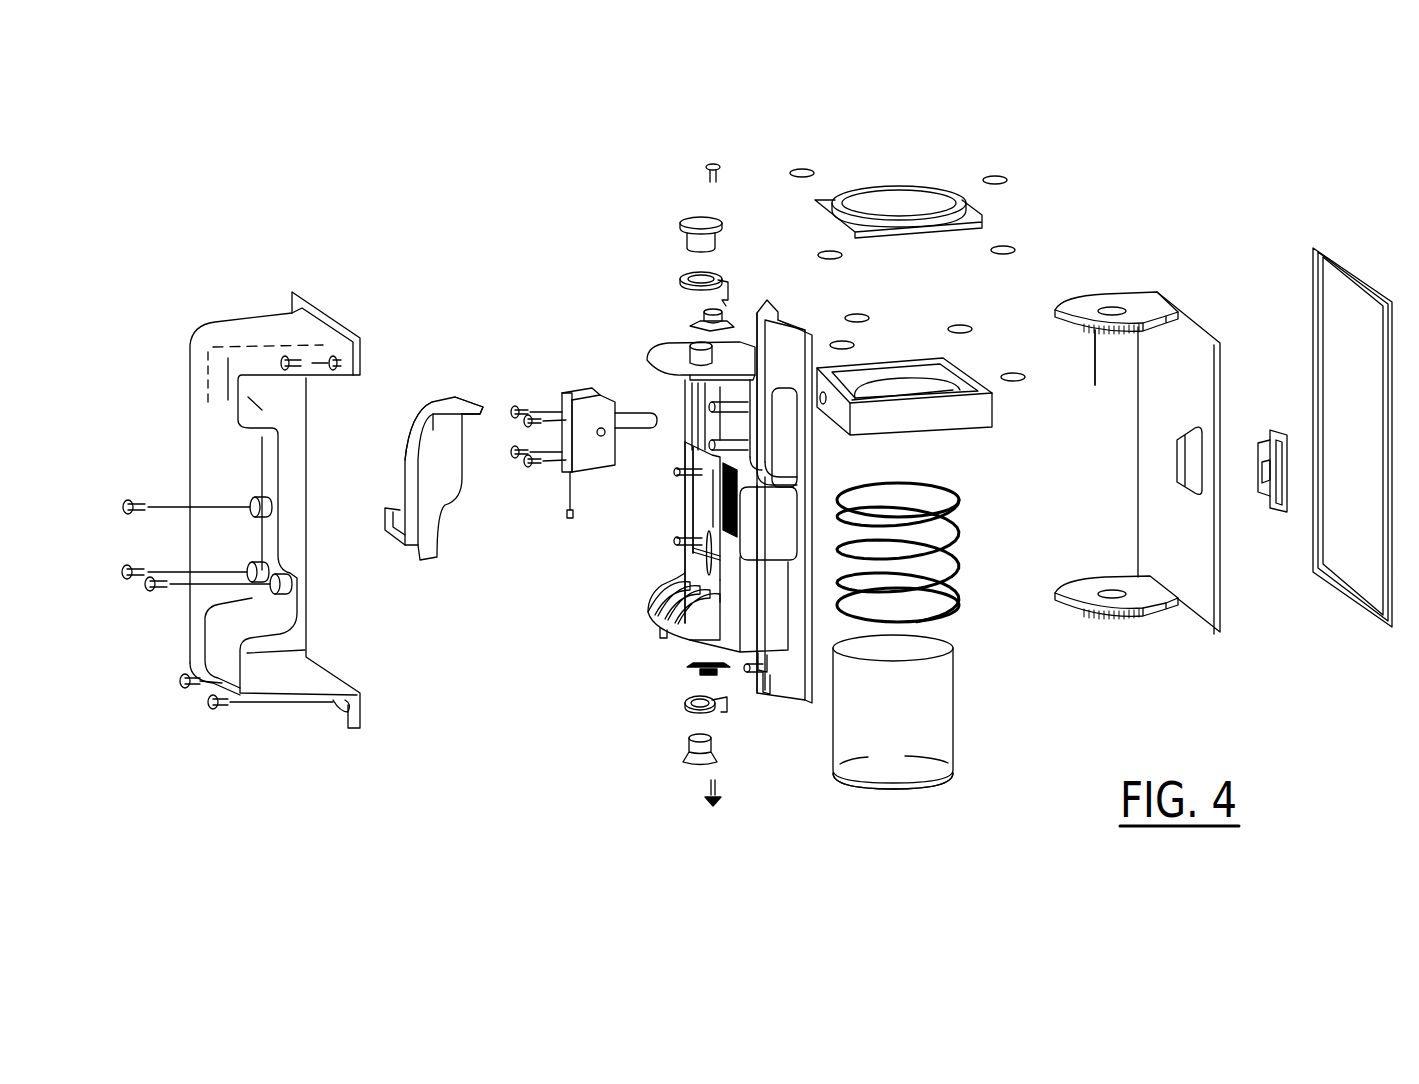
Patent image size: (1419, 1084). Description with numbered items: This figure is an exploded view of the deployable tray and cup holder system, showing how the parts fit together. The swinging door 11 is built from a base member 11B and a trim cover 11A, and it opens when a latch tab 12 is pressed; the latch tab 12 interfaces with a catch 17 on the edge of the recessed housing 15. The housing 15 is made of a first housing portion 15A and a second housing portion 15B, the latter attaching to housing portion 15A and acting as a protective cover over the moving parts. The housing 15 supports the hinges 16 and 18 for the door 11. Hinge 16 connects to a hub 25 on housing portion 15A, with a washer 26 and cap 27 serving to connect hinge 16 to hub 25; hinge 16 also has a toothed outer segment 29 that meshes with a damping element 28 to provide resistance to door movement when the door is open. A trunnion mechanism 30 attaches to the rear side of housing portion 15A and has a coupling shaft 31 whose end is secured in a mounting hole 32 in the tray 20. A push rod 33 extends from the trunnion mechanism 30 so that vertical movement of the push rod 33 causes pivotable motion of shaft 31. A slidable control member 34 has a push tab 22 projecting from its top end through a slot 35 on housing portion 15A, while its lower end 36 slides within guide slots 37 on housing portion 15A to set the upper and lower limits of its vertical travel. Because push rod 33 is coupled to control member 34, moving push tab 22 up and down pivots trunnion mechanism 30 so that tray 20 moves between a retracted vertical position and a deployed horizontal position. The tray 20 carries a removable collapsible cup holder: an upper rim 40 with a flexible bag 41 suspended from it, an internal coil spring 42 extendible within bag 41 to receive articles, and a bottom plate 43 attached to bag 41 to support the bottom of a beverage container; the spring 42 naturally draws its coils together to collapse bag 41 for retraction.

The swinging door 11 is at (1370, 195).
The trim cover 11A is at (1368, 284).
The base member 11B is at (1213, 328).
The latch tab 12 is at (1268, 427).
The recessed housing 15 is at (153, 788).
The first housing portion 15A is at (793, 692).
The second housing portion 15B is at (283, 703).
The hinge 16 is at (1107, 295).
The catch 17 is at (792, 542).
The hinge 18 is at (1115, 617).
The tray 20 is at (993, 413).
The push tab 22 is at (467, 402).
The hub 25 is at (697, 346).
The washer 26 is at (690, 273).
The cap 27 is at (698, 220).
The damping element 28 is at (733, 324).
The toothed outer segment 29 is at (1095, 385).
The trunnion mechanism 30 is at (592, 395).
The coupling shaft 31 is at (650, 428).
The mounting hole 32 is at (830, 397).
The push rod 33 is at (563, 493).
The slidable control member 34 is at (410, 436).
The slot 35 is at (781, 311).
The lower end 36 is at (447, 540).
The guide slots 37 is at (700, 514).
The upper rim 40 is at (912, 182).
The flexible bag 41 is at (950, 702).
The internal coil spring 42 is at (957, 598).
The bottom plate 43 is at (893, 790).